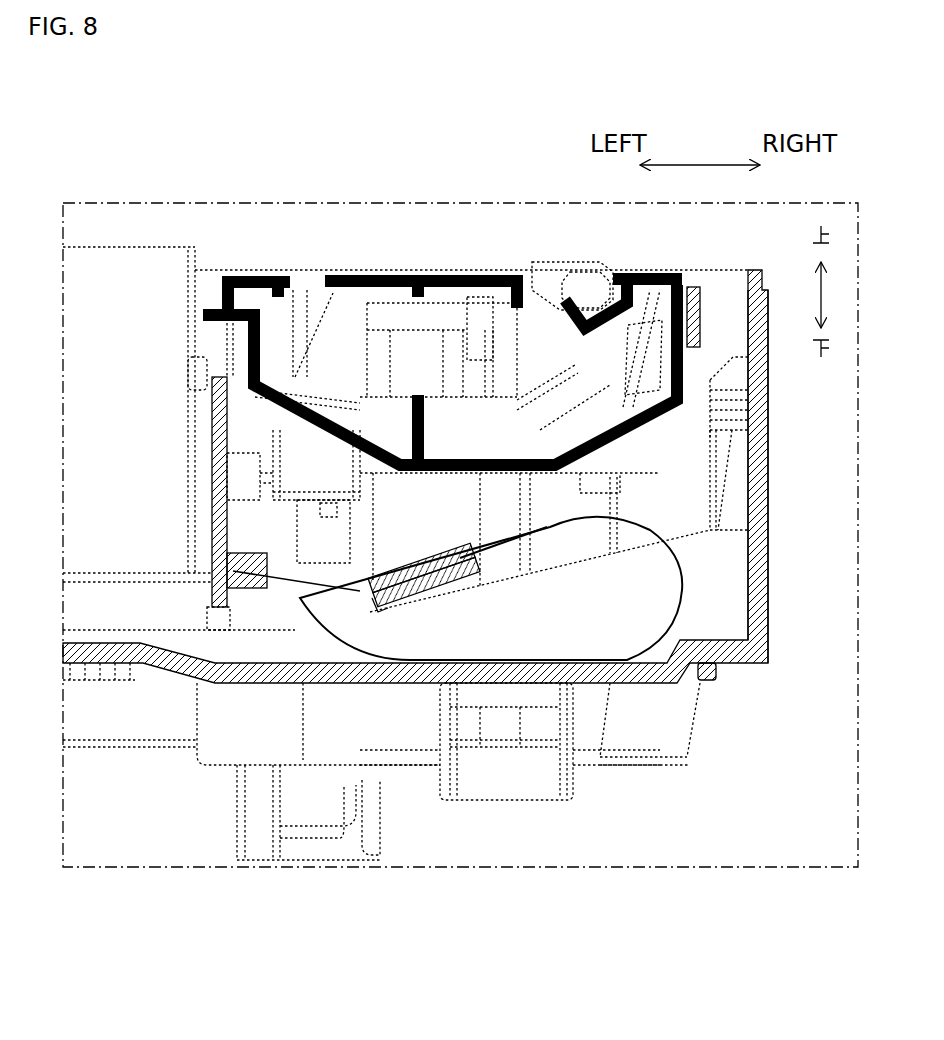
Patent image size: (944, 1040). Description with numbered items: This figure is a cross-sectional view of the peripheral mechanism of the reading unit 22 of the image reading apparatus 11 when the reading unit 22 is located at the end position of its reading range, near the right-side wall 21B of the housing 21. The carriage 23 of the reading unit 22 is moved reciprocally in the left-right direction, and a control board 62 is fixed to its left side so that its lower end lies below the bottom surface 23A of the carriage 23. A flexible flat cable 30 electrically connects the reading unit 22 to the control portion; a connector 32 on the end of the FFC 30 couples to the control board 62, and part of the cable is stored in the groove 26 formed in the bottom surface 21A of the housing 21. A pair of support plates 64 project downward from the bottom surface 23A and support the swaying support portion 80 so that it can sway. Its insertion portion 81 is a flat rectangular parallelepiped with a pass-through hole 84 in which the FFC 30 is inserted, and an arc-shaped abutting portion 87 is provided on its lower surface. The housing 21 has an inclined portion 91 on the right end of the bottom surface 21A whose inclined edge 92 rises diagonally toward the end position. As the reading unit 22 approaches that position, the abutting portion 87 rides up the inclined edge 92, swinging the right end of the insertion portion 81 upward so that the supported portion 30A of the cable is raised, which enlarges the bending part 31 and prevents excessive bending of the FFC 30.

The image forming apparatus 11 is at (770, 226).
The housing 21 is at (748, 270).
The bottom surface 21A is at (710, 682).
The right-side wall 21B is at (769, 428).
The reading unit 22 is at (410, 256).
The carriage 23 is at (273, 270).
The bottom surface 23A is at (410, 472).
The groove 26 is at (224, 652).
The flexible flat cable 30 is at (553, 530).
The supported portion 30A is at (480, 555).
The bending part 31 is at (690, 574).
The connector 32 is at (243, 552).
The control board 62 is at (193, 430).
The support plates 64 is at (372, 550).
The swaying support portion 80 is at (437, 590).
The insertion portion 81 is at (388, 582).
The pass-through hole 84 is at (374, 598).
The abutting portion 87 is at (478, 583).
The inclined portion 91 is at (717, 540).
The inclined edge 92 is at (682, 537).